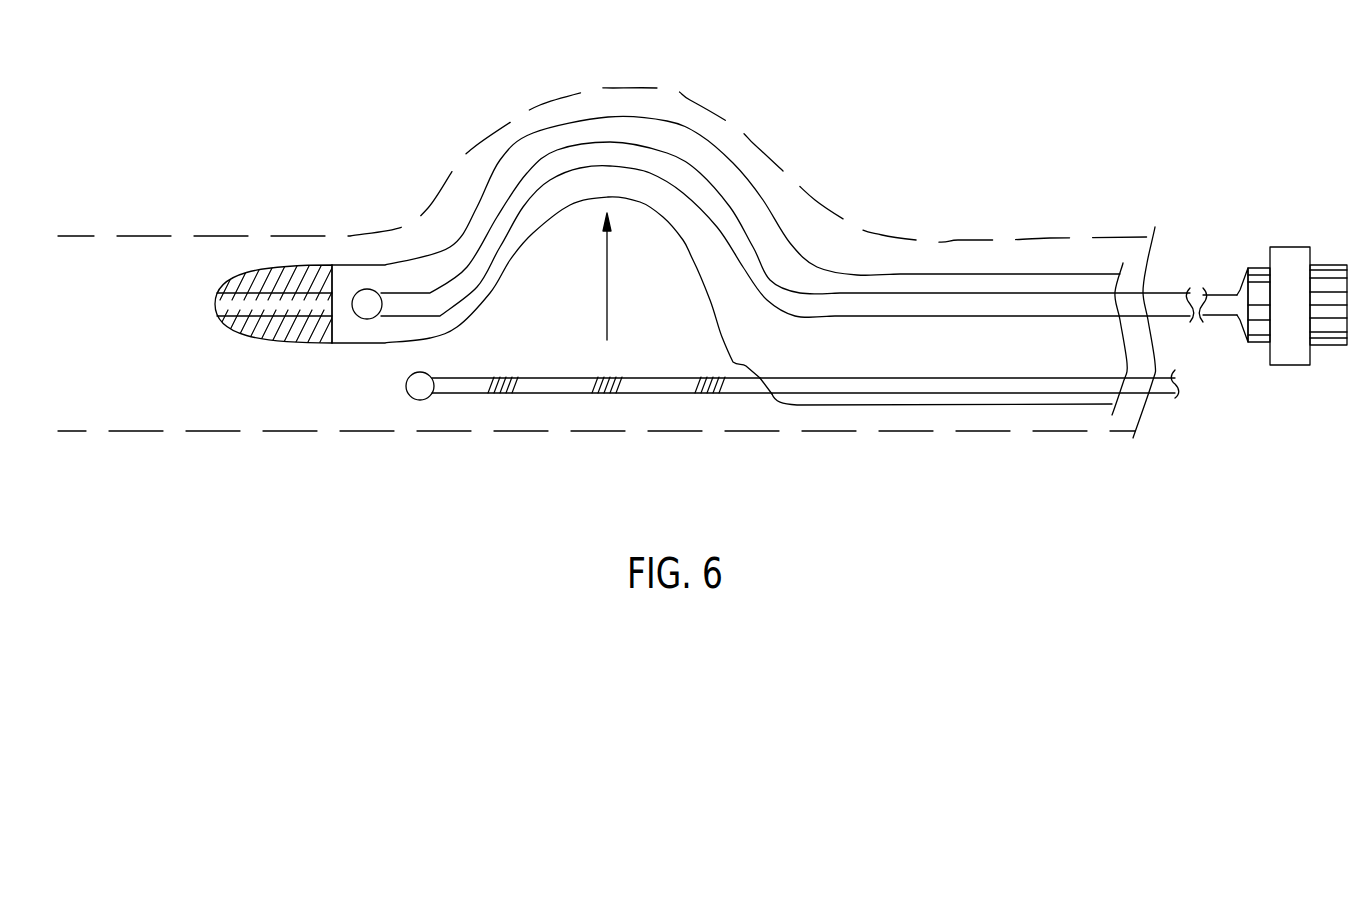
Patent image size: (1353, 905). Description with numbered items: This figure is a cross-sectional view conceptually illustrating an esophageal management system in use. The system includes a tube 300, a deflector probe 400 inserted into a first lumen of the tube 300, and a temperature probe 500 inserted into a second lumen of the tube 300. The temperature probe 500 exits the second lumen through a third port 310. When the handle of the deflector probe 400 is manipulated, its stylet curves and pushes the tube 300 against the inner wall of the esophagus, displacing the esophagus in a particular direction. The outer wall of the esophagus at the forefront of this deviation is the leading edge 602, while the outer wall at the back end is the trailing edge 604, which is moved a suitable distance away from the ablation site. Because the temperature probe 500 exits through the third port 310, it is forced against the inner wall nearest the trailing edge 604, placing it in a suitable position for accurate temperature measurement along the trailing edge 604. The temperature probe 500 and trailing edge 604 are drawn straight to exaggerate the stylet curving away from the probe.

The tube 300 is at (707, 137).
The deflector probe 400 is at (740, 212).
The temperature probe 500 is at (562, 387).
The third port 310 is at (755, 416).
The leading edge 602 is at (538, 107).
The trailing edge 604 is at (437, 432).